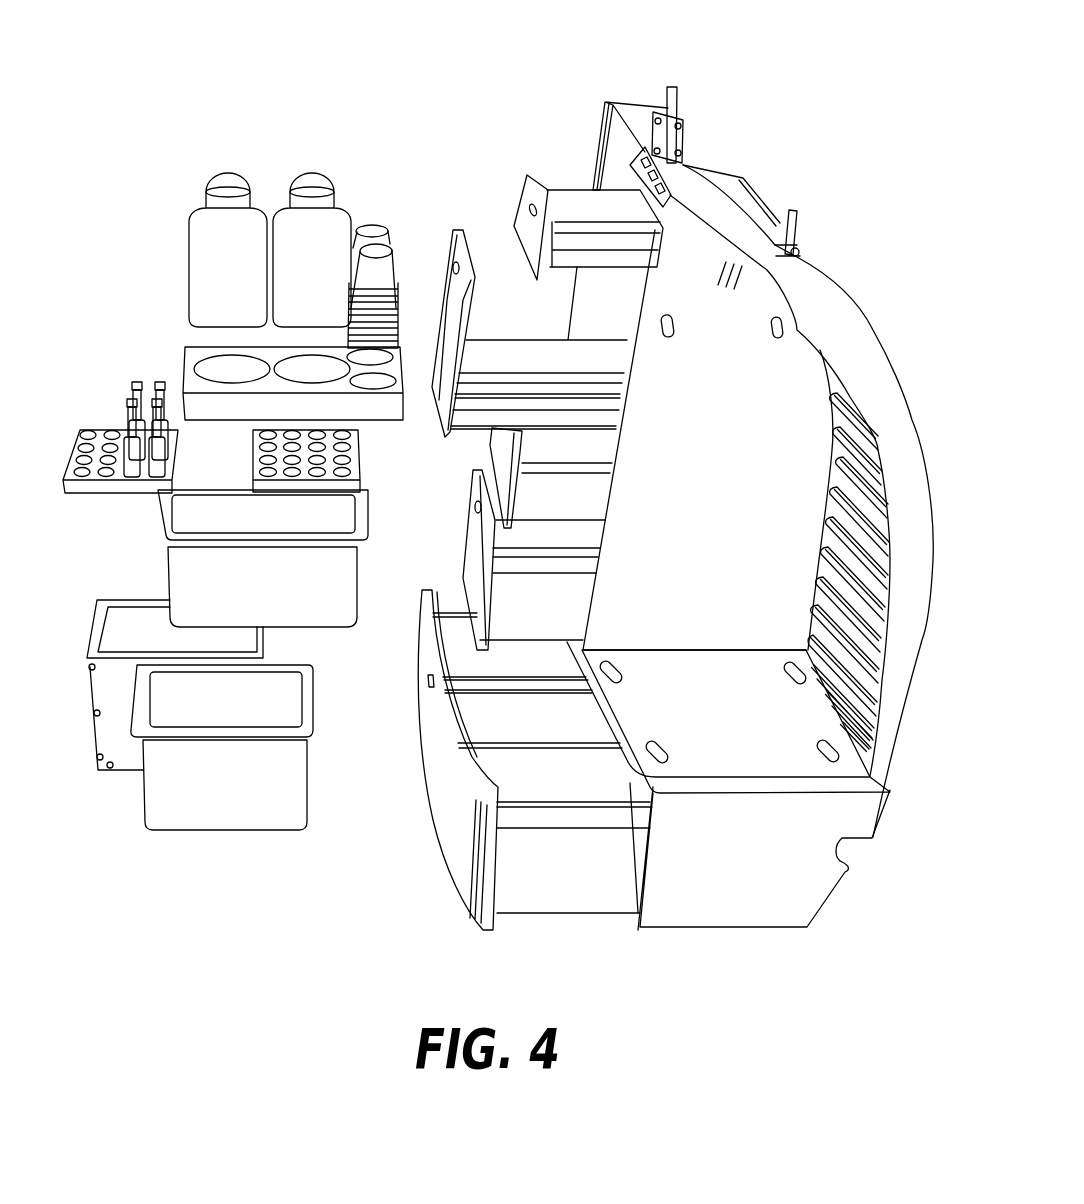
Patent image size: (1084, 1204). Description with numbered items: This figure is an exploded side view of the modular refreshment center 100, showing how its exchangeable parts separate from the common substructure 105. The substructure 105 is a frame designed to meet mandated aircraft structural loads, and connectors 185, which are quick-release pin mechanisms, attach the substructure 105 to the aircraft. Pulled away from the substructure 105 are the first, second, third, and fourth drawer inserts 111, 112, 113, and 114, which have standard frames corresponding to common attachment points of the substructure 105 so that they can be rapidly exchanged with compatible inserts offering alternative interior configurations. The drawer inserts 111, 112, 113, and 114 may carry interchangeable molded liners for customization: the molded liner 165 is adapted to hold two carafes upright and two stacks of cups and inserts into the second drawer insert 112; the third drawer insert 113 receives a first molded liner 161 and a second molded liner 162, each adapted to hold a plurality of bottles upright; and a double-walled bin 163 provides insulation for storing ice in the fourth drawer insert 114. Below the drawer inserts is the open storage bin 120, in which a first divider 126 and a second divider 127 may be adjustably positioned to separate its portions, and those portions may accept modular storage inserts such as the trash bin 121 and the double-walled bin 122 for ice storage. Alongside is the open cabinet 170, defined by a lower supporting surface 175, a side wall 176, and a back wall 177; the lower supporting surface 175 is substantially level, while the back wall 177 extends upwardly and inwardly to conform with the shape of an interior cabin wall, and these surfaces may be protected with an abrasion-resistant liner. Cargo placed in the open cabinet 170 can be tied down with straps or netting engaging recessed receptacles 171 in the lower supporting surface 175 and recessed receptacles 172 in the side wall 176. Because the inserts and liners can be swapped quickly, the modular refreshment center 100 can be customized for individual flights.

The modular refreshment center 100 is at (503, 465).
The substructure 105 is at (801, 501).
The first drawer insert 111 is at (557, 210).
The second drawer insert 112 is at (428, 302).
The third drawer insert 113 is at (455, 478).
The fourth drawer insert 114 is at (444, 560).
The open storage bin 120 is at (430, 760).
The trash bin 121 is at (153, 689).
The double-walled bin 122 is at (203, 779).
The first divider 126 is at (517, 703).
The second divider 127 is at (555, 828).
The first molded liner 161 is at (114, 423).
The second molded liner 162 is at (274, 461).
The double-walled bin 163 is at (225, 558).
The molded liner 165 is at (260, 296).
The open cabinet 170 is at (797, 823).
The recessed receptacles 171 is at (719, 712).
The recessed receptacles 172 is at (722, 366).
The lower supporting surface 175 is at (728, 717).
The side wall 176 is at (708, 376).
The back wall 177 is at (848, 572).
The connectors 185 is at (742, 165).